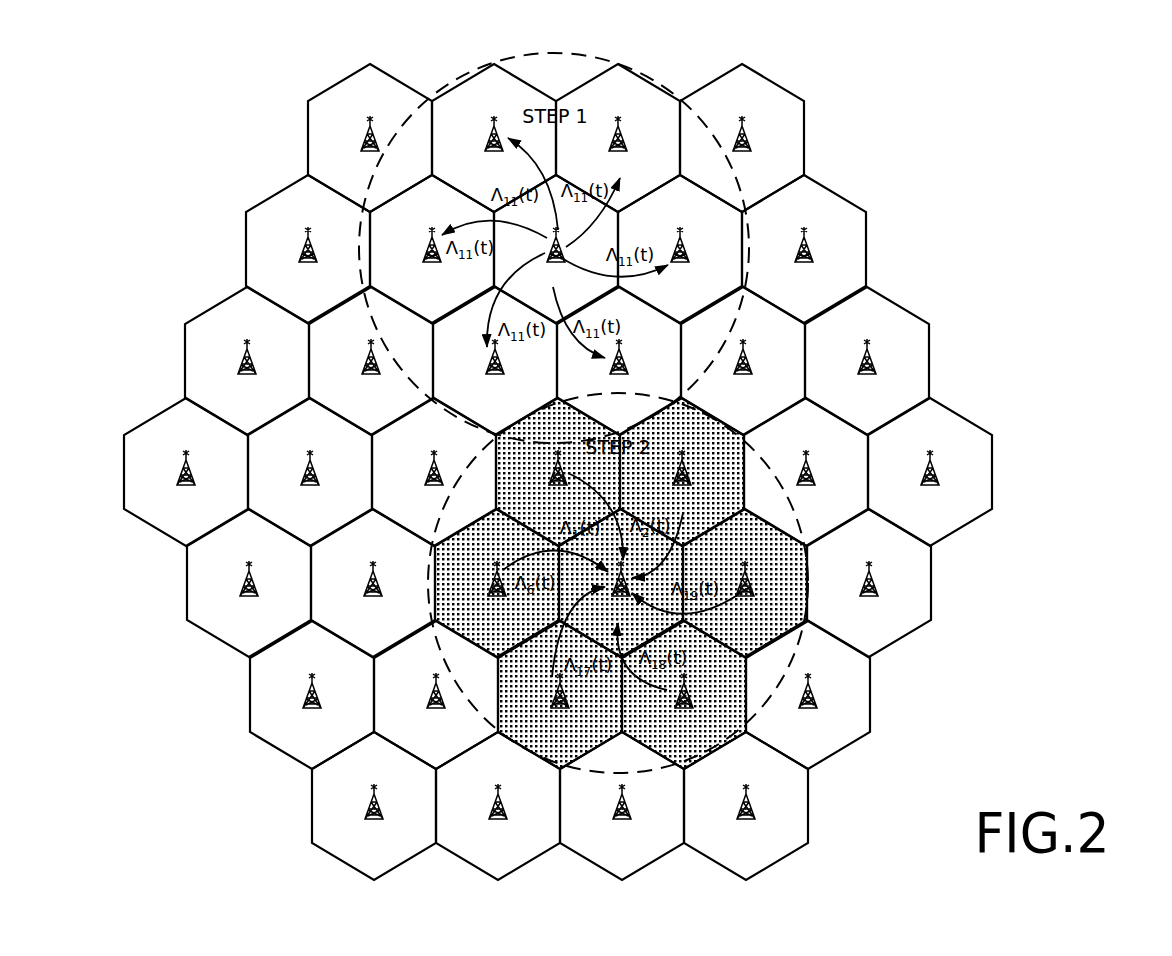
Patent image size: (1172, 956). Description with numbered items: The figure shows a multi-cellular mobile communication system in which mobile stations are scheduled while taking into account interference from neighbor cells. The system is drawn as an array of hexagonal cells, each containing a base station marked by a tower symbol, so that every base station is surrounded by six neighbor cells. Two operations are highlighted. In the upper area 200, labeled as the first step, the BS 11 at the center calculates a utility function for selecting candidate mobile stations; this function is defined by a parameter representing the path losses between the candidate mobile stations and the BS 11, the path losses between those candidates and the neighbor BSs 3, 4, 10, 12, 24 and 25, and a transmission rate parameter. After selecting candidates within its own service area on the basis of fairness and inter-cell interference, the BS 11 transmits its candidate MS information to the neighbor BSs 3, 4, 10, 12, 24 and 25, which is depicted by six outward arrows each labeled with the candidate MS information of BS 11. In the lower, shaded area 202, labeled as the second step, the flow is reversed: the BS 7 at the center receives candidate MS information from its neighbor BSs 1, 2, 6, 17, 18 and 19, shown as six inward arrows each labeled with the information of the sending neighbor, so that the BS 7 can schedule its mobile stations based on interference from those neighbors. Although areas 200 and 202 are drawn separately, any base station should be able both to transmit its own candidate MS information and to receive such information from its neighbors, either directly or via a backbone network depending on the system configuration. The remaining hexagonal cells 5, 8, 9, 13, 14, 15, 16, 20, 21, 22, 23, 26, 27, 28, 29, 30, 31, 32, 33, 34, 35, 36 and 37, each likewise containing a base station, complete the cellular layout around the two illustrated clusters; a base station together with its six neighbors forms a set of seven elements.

The neighbor BS 1 is at (558, 472).
The neighbor BS 2 is at (682, 472).
The neighbor BS 3 is at (619, 361).
The neighbor BS 4 is at (495, 361).
The cell 5 (base station) 5 is at (434, 472).
The neighbor BS 6 is at (497, 583).
The BS 7 is at (621, 583).
The cell 8 (base station) 8 is at (806, 472).
The cell 9 (base station) 9 is at (743, 361).
The neighbor BS 10 is at (680, 249).
The BS 11 is at (556, 249).
The neighbor BS 12 is at (432, 249).
The cell 13 (base station) 13 is at (371, 361).
The cell 14 (base station) 14 is at (310, 472).
The cell 15 (base station) 15 is at (373, 583).
The cell 16 (base station) 16 is at (436, 695).
The neighbor BS 17 is at (560, 695).
The neighbor BS 18 is at (684, 695).
The neighbor BS 19 is at (745, 583).
The cell 20 (base station) 20 is at (930, 472).
The cell 21 (base station) 21 is at (867, 361).
The cell 22 (base station) 22 is at (804, 249).
The cell 23 (base station) 23 is at (742, 138).
The neighbor BS 24 is at (618, 138).
The neighbor BS 25 is at (494, 138).
The cell 26 (base station) 26 is at (370, 138).
The cell 27 (base station) 27 is at (308, 249).
The cell 28 (base station) 28 is at (247, 361).
The cell 29 (base station) 29 is at (186, 472).
The cell 30 (base station) 30 is at (249, 583).
The cell 31 (base station) 31 is at (312, 695).
The cell 32 (base station) 32 is at (374, 806).
The cell 33 (base station) 33 is at (498, 806).
The cell 34 (base station) 34 is at (622, 806).
The cell 35 (base station) 35 is at (746, 806).
The cell 36 (base station) 36 is at (808, 695).
The cell 37 (base station) 37 is at (869, 583).
The area 200 is at (652, 80).
The area 202 is at (798, 653).